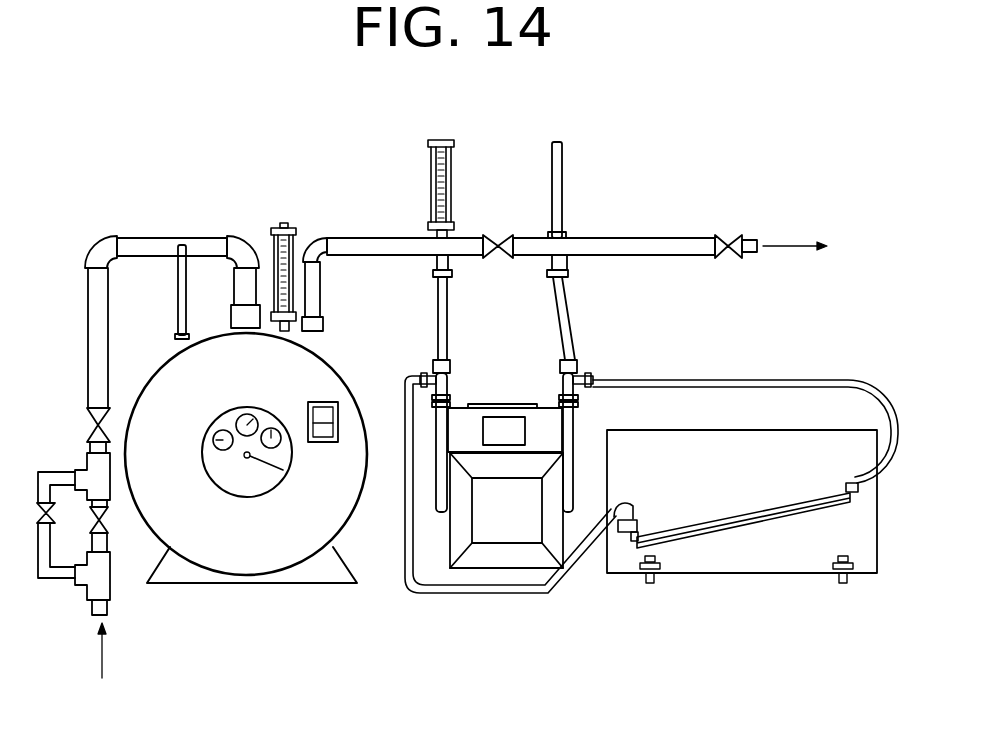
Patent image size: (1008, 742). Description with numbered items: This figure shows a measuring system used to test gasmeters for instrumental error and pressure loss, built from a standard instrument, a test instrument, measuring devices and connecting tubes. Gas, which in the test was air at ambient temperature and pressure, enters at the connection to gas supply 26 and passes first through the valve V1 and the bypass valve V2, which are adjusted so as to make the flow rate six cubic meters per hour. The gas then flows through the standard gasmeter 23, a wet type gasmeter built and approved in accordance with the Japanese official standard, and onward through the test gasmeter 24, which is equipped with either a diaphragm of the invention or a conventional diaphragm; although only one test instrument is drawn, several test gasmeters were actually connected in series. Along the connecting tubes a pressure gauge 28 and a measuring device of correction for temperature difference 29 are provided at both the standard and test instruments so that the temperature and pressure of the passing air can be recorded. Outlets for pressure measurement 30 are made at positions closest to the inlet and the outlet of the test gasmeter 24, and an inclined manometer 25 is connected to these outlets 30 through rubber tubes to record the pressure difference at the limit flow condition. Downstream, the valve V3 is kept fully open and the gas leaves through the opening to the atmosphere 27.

The standard gasmeter 23 is at (256, 553).
The test gasmeter 24 is at (505, 528).
The inclined manometer 25 is at (742, 560).
The connection to gas supply 26 is at (105, 668).
The opening to the atmosphere 27 is at (818, 253).
The pressure gauge 28 is at (273, 227).
The measuring device of correction for temperature difference 29 is at (176, 275).
The inlet or outlet of the test gasmeter 30 is at (422, 380).
The valve V1 is at (87, 428).
The valve V2 is at (40, 514).
The valve V3 is at (728, 237).